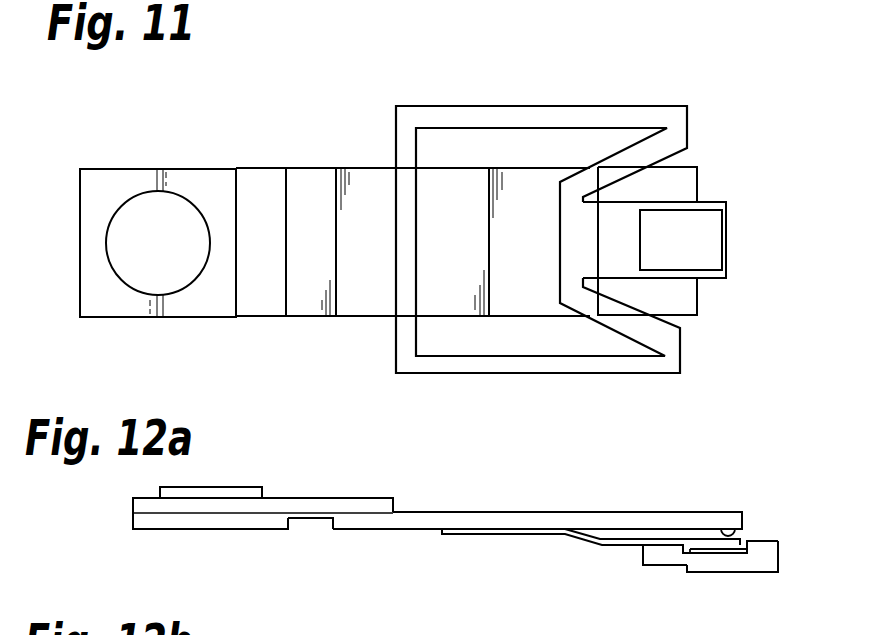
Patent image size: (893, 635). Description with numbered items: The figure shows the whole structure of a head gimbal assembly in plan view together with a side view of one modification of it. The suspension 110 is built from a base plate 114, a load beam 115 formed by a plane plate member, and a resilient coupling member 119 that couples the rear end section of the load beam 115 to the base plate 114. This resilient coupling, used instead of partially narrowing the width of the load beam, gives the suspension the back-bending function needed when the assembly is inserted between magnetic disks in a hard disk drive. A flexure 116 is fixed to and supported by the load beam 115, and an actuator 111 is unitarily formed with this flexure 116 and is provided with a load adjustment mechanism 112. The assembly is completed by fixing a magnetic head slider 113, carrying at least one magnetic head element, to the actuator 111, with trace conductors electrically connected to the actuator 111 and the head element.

In FIG. 11, the suspension 110 is at (534, 88).
In FIG. 11, the actuator 111 is at (630, 207).
In FIG. 12a, the actuator 111 is at (663, 562).
In FIG. 12a, the load adjustment mechanism 112 is at (740, 539).
In FIG. 11, the magnetic head slider 113 is at (708, 248).
In FIG. 12a, the magnetic head slider 113 is at (743, 568).
In FIG. 11, the base plate 114 is at (190, 178).
In FIG. 12a, the base plate 114 is at (230, 525).
In FIG. 11, the load beam 115 is at (380, 180).
In FIG. 12a, the load beam 115 is at (555, 522).
In FIG. 11, the flexure 116 is at (437, 117).
In FIG. 12a, the flexure 116 is at (608, 545).
In FIG. 11, the resilient coupling member 119 is at (255, 177).
In FIG. 12a, the resilient coupling member 119 is at (307, 508).